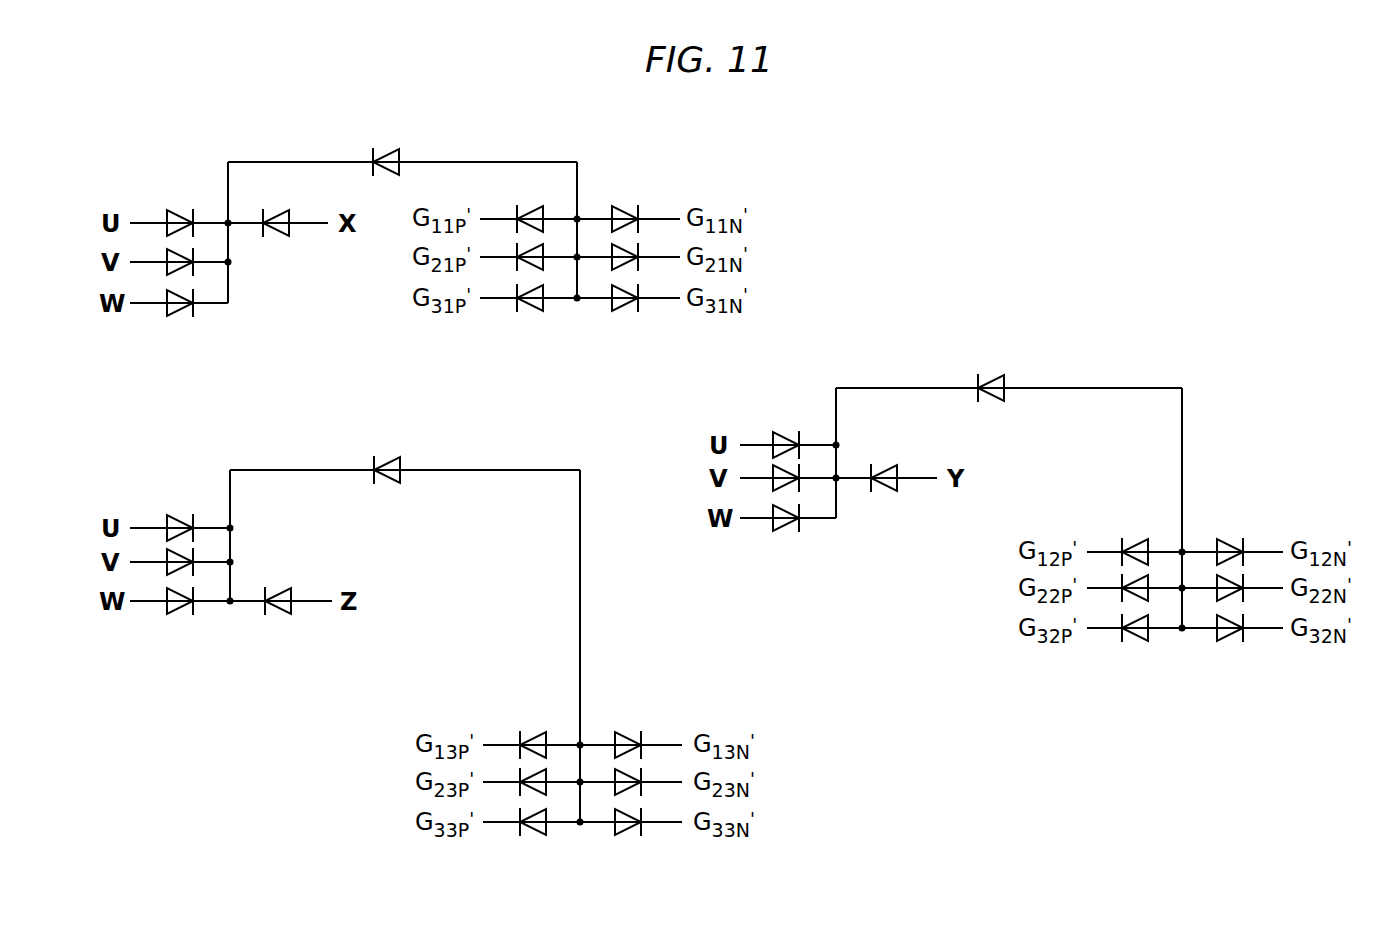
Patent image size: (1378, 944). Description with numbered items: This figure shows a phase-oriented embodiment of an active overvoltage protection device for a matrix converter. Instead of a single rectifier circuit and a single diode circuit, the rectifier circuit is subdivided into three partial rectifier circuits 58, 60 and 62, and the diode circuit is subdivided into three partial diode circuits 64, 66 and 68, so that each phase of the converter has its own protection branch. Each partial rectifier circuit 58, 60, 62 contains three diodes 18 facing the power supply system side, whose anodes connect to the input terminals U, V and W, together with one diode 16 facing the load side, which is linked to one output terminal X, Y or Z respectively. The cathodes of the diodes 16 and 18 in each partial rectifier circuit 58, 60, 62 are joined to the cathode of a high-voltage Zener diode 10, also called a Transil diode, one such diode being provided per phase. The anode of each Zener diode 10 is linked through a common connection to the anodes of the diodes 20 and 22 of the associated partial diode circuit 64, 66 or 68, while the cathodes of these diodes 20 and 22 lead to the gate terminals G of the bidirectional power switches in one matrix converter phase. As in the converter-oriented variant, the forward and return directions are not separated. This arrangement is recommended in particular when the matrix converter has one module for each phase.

The high-voltage Zener diode 10 is at (384, 150).
The diodes facing the load side 16 is at (582, 395).
The diodes facing the power supply system side 18 is at (486, 395).
The diodes 20 is at (835, 538).
The diodes 22 is at (931, 538).
The partial rectifier circuit 58 is at (231, 284).
The partial rectifier circuit 60 is at (838, 502).
The partial rectifier circuit 62 is at (232, 582).
The partial diode circuit 64 is at (596, 216).
The partial diode circuit 66 is at (1199, 548).
The partial diode circuit 68 is at (592, 742).